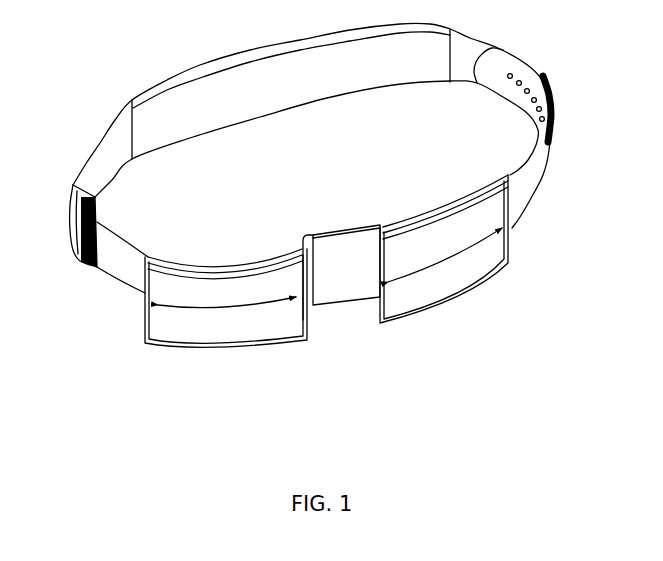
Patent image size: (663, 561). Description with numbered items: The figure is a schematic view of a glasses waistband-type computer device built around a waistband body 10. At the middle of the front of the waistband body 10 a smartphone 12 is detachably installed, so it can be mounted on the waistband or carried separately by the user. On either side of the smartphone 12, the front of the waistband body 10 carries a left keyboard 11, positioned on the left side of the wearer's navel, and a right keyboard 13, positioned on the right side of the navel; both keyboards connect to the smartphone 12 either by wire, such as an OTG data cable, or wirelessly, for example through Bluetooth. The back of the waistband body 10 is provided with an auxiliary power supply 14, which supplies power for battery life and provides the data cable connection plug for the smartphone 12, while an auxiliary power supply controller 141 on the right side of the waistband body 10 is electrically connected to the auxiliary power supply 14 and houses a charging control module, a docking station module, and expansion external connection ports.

The waistband body 10 is at (530, 182).
The left keyboard 11 is at (437, 287).
The smartphone 12 is at (335, 278).
The right keyboard 13 is at (195, 333).
The auxiliary power supply 14 is at (190, 78).
The auxiliary power supply controller 141 is at (80, 241).